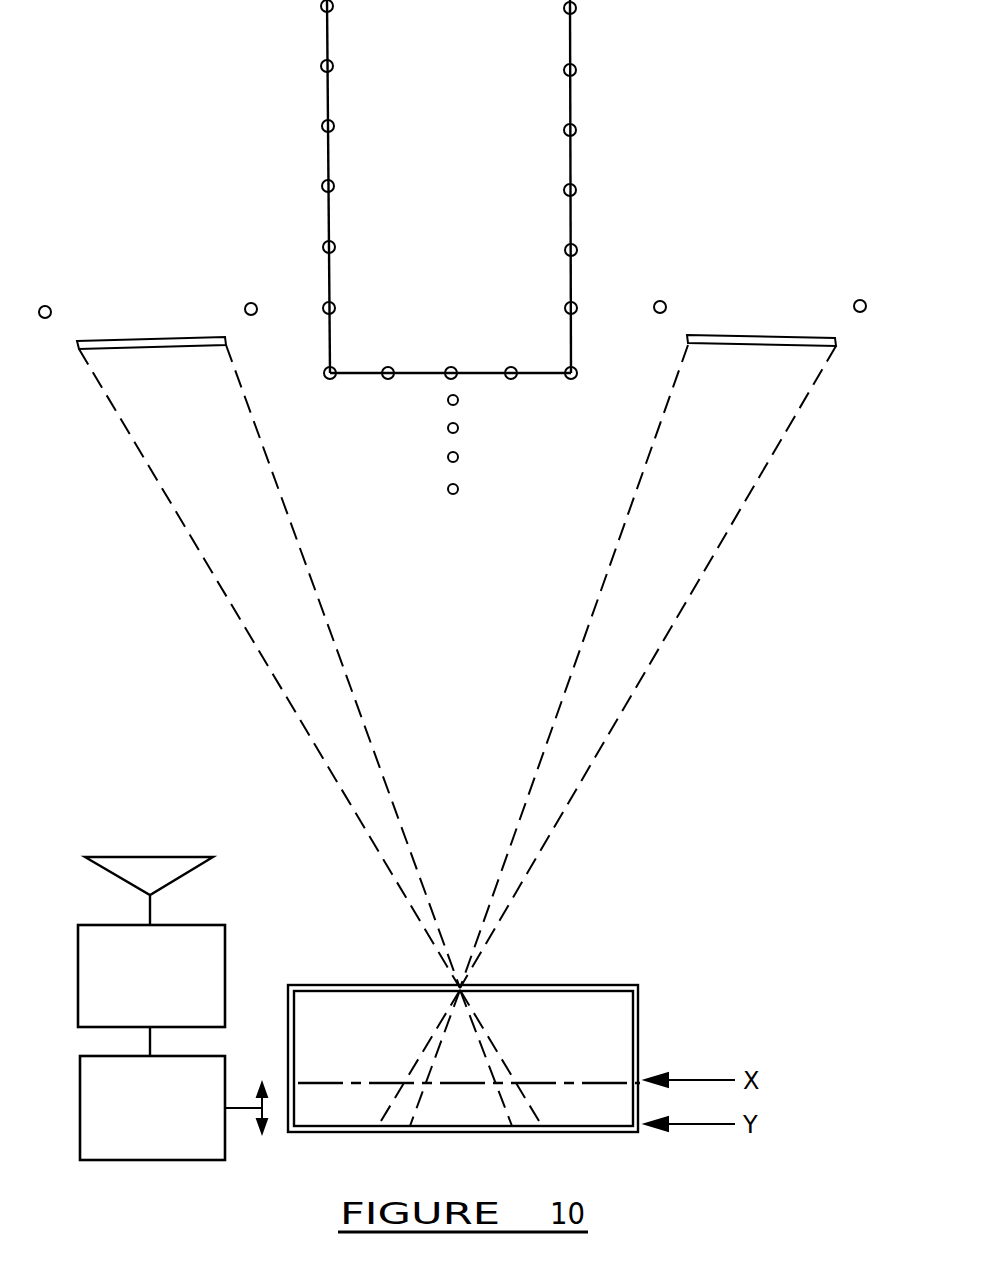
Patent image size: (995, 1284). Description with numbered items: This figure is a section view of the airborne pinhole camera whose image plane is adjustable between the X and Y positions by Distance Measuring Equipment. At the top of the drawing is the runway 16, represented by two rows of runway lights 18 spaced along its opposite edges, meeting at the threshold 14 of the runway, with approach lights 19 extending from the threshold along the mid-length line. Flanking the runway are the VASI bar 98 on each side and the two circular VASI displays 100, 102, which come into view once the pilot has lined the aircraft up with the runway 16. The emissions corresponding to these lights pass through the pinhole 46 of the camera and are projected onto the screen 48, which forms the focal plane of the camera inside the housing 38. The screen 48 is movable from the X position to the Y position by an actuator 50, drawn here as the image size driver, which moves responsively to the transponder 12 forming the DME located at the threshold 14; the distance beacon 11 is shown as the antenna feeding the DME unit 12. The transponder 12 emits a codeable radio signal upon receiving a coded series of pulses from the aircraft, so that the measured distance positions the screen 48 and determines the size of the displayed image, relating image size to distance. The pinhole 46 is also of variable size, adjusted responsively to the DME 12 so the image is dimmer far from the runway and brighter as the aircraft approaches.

The distance beacon 11 is at (185, 878).
The transponder 12 is at (225, 966).
The threshold 14 is at (365, 376).
The runway 16 is at (388, 126).
The runway lights 18 is at (575, 130).
The approach lights 19 is at (459, 456).
The display screen 38 is at (640, 1008).
The pinhole 46 is at (463, 988).
The screen 48 is at (605, 1081).
The actuator 50 is at (142, 1161).
The VASI bar 98 is at (150, 338).
The circular VASI display 100 is at (47, 305).
The circular VASI display 102 is at (250, 302).